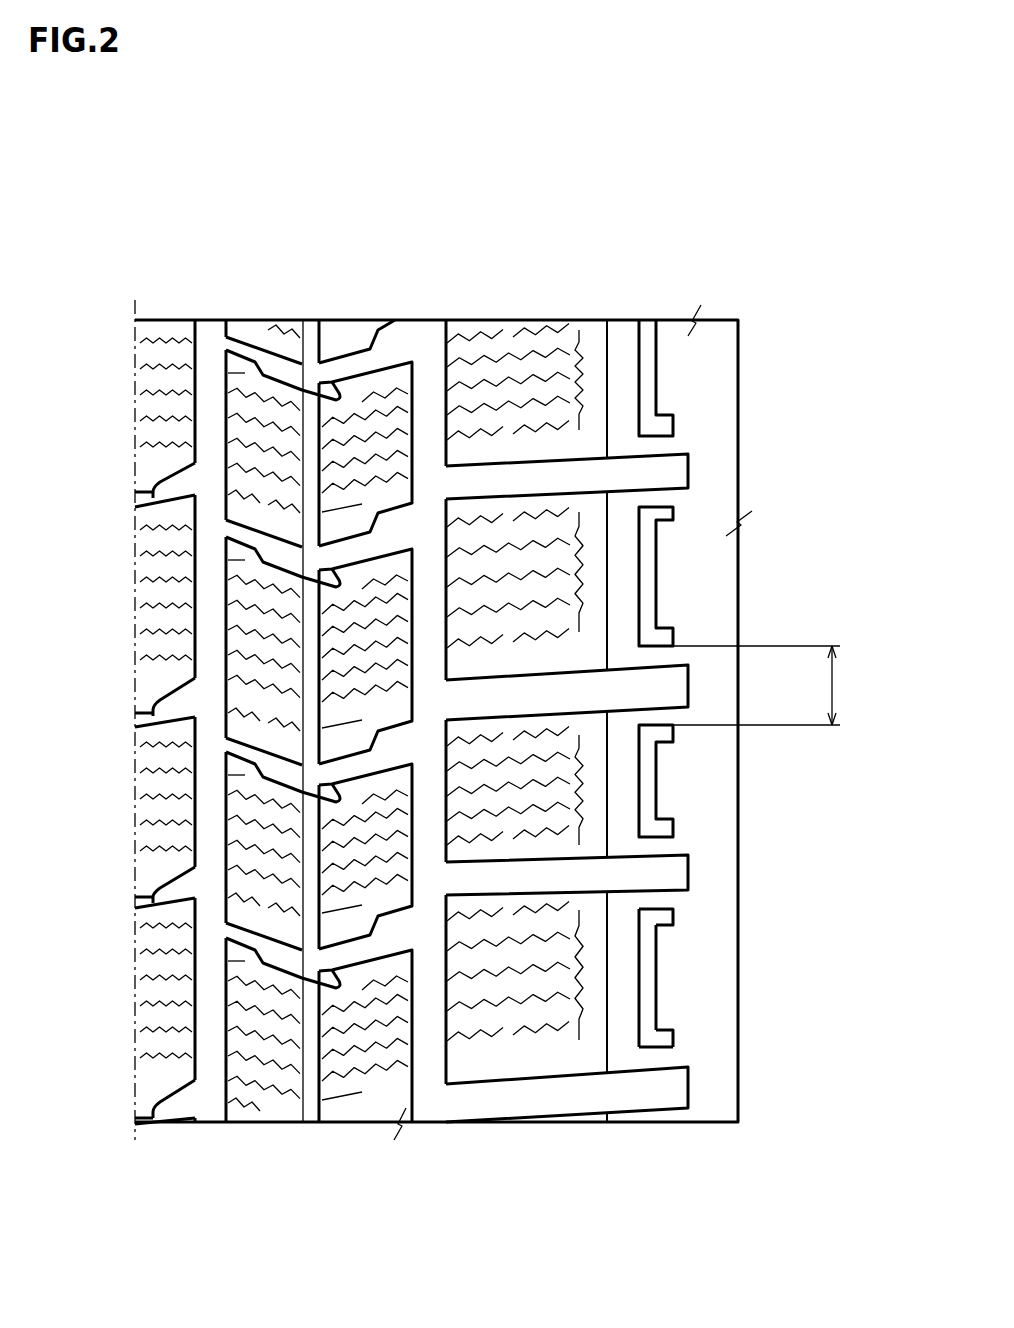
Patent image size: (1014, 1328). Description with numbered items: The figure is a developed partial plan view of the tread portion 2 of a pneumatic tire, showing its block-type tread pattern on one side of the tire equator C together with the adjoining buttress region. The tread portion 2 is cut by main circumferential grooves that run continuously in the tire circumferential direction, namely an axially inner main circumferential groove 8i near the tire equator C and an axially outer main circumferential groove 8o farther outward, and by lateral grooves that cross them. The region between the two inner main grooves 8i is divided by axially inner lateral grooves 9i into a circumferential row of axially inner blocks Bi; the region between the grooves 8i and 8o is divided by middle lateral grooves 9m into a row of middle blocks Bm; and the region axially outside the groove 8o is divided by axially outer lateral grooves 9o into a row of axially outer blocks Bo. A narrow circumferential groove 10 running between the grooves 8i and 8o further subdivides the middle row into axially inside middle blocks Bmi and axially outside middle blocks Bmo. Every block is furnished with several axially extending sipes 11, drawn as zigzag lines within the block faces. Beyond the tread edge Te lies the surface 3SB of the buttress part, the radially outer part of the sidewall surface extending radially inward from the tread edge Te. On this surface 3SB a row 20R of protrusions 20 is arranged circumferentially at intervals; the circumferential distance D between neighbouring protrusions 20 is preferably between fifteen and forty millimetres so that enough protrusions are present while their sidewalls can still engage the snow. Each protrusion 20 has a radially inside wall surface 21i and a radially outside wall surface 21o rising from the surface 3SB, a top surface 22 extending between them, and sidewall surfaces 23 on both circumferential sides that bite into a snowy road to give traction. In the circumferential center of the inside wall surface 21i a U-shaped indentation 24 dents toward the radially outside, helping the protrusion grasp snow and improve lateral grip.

The tread portion 2 is at (706, 283).
The axially inner main circumferential groove 8i is at (203, 350).
The axially outer main circumferential groove 8o is at (437, 350).
The axially inner lateral groove 9i is at (153, 497).
The middle lateral groove 9m is at (347, 363).
The axially outer lateral groove 9o is at (648, 475).
The narrow circumferential groove 10 is at (305, 350).
The sipes 11 is at (250, 390).
The protrusion 20 is at (708, 760).
The row of protrusions 20R is at (658, 1052).
The radially inside wall surface 21i is at (660, 1020).
The radially outside wall surface 21o is at (640, 1015).
The top surface 22 is at (645, 942).
The sidewall surfaces 23 is at (668, 873).
The indentation 24 is at (658, 997).
The surface of the buttress part 3SB is at (716, 760).
The tread edge Te is at (608, 377).
The tire equator C is at (136, 706).
The circumferential distance D is at (756, 685).
The axially inner block Bi is at (137, 700).
The axially inside middle block Bmi is at (263, 1103).
The axially outside middle block Bmo is at (353, 1102).
The middle block Bm is at (319, 721).
The axially outer block Bo is at (625, 827).